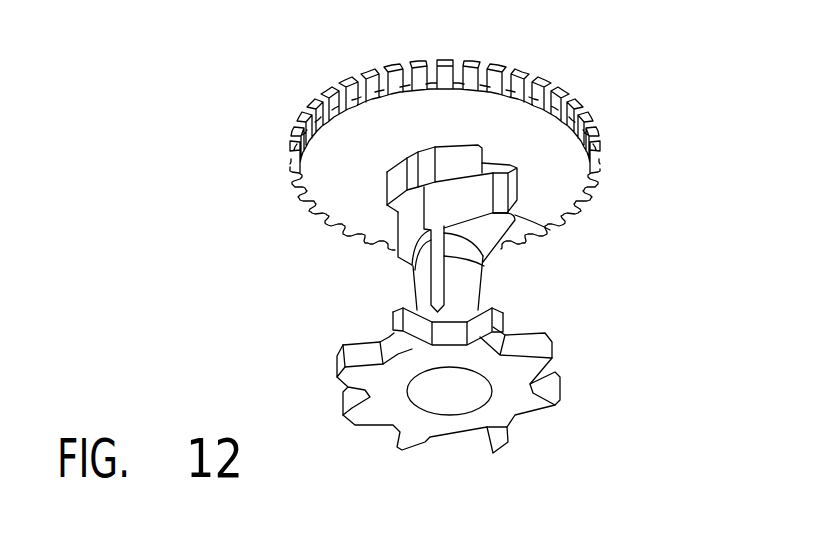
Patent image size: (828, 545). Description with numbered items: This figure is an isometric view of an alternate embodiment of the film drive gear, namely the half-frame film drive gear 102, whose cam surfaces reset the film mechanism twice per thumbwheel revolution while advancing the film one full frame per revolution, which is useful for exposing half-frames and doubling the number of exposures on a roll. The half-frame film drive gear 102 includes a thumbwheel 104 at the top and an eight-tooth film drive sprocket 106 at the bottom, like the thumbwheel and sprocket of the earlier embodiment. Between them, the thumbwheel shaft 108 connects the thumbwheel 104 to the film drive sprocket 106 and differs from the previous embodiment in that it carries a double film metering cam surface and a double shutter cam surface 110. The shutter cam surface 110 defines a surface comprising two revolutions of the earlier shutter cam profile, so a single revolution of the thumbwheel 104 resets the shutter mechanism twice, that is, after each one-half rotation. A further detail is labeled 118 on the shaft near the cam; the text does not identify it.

The half-frame film drive gear 102 is at (612, 49).
The thumbwheel 104 is at (598, 147).
The eight-tooth film drive sprocket 106 is at (553, 357).
The thumbwheel shaft 108 is at (413, 292).
The double shutter cam surface 110 is at (543, 229).
The key 118 is at (518, 180).